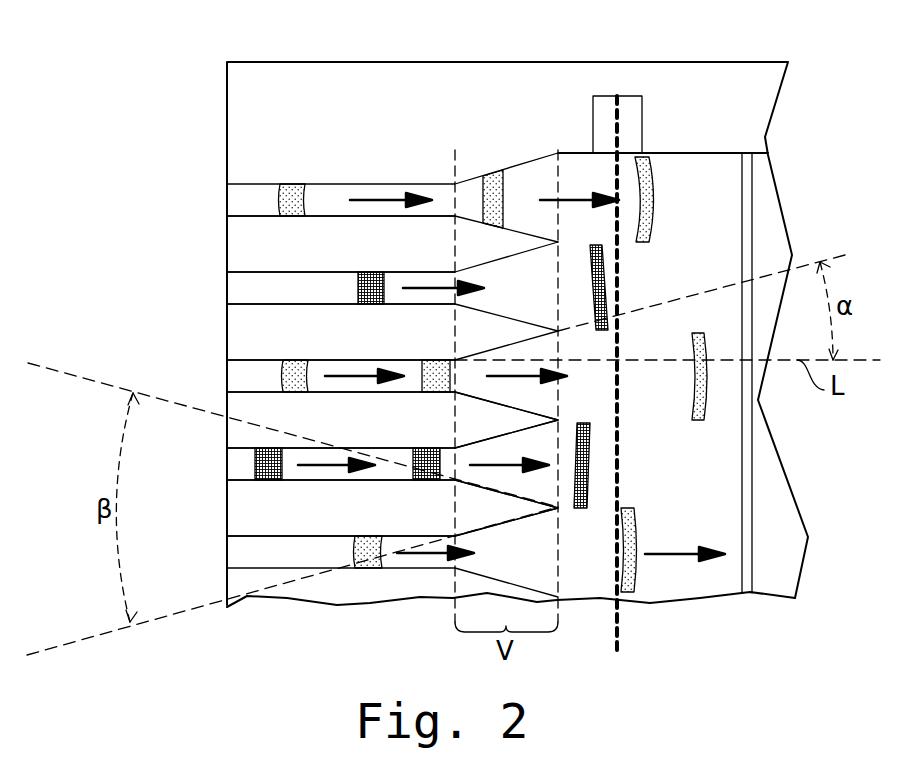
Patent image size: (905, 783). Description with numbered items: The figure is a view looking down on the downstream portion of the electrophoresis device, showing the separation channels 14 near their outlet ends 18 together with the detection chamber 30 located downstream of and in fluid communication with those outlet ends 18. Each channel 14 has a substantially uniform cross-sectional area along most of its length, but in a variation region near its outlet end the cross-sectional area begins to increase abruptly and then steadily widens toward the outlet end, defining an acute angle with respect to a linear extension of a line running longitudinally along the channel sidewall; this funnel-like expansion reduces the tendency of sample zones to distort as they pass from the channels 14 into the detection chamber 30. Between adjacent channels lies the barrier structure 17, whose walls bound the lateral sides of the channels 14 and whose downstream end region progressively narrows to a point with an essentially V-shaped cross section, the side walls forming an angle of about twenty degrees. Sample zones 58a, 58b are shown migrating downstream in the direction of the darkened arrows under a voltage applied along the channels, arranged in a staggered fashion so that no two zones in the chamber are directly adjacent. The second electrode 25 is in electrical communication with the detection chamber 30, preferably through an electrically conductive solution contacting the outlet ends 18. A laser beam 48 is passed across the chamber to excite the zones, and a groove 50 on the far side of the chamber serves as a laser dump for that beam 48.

The separation channels 14 is at (227, 466).
The barrier structure 17 is at (233, 514).
The outlet ends 18 is at (558, 420).
The second electrode 25 is at (752, 535).
The detection chamber 30 is at (647, 578).
The beam 48 is at (617, 260).
The groove 50 is at (638, 117).
The sample zone 58a is at (600, 287).
The sample zone 58b is at (707, 383).